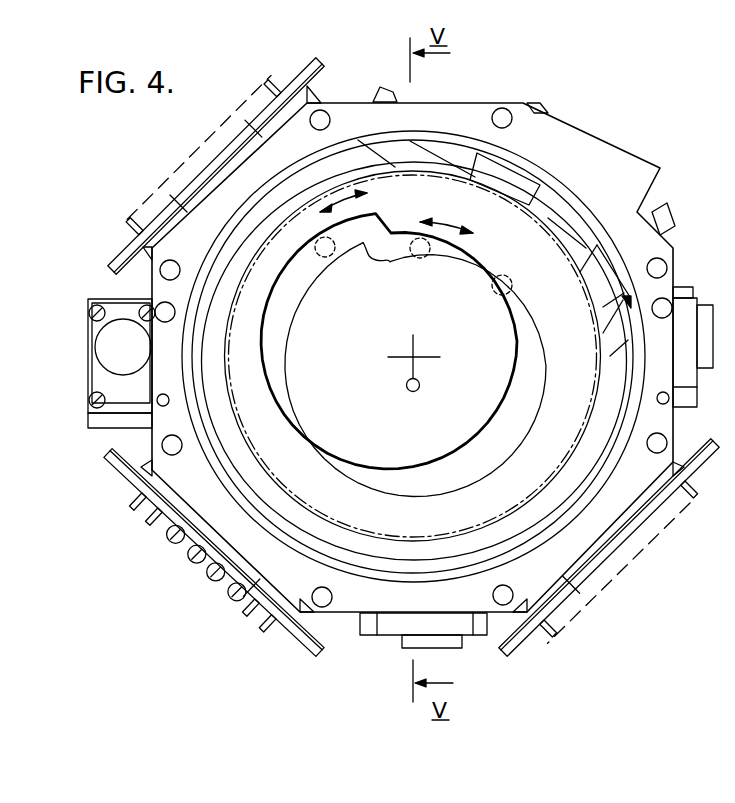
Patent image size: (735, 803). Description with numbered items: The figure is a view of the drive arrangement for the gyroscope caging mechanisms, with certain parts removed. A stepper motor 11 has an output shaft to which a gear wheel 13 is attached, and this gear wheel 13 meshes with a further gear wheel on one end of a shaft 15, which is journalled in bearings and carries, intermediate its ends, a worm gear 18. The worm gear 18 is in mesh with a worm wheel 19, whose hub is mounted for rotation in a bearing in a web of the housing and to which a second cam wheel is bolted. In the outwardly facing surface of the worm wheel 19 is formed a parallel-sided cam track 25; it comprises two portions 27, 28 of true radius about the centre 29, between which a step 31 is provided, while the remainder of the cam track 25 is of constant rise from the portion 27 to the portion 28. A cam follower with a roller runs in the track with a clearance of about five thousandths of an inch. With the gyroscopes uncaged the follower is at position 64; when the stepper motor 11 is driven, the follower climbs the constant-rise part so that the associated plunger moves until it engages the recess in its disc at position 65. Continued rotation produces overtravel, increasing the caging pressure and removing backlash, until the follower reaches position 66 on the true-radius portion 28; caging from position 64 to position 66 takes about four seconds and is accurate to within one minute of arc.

The stepper motor 11 is at (540, 104).
The gear wheel 13 is at (674, 206).
The shaft 15 is at (555, 208).
The worm gear 18 is at (517, 180).
The worm wheel 19 is at (389, 327).
The cam track 25 is at (492, 261).
The portion of true radius 27 is at (340, 203).
The portion of true radius 28 is at (465, 214).
The centre 29 is at (411, 354).
The step 31 is at (386, 264).
The uncaged cam follower position 64 is at (331, 256).
The caged cam follower position 65 is at (496, 294).
The end-of-overtravel cam follower position 66 is at (427, 257).